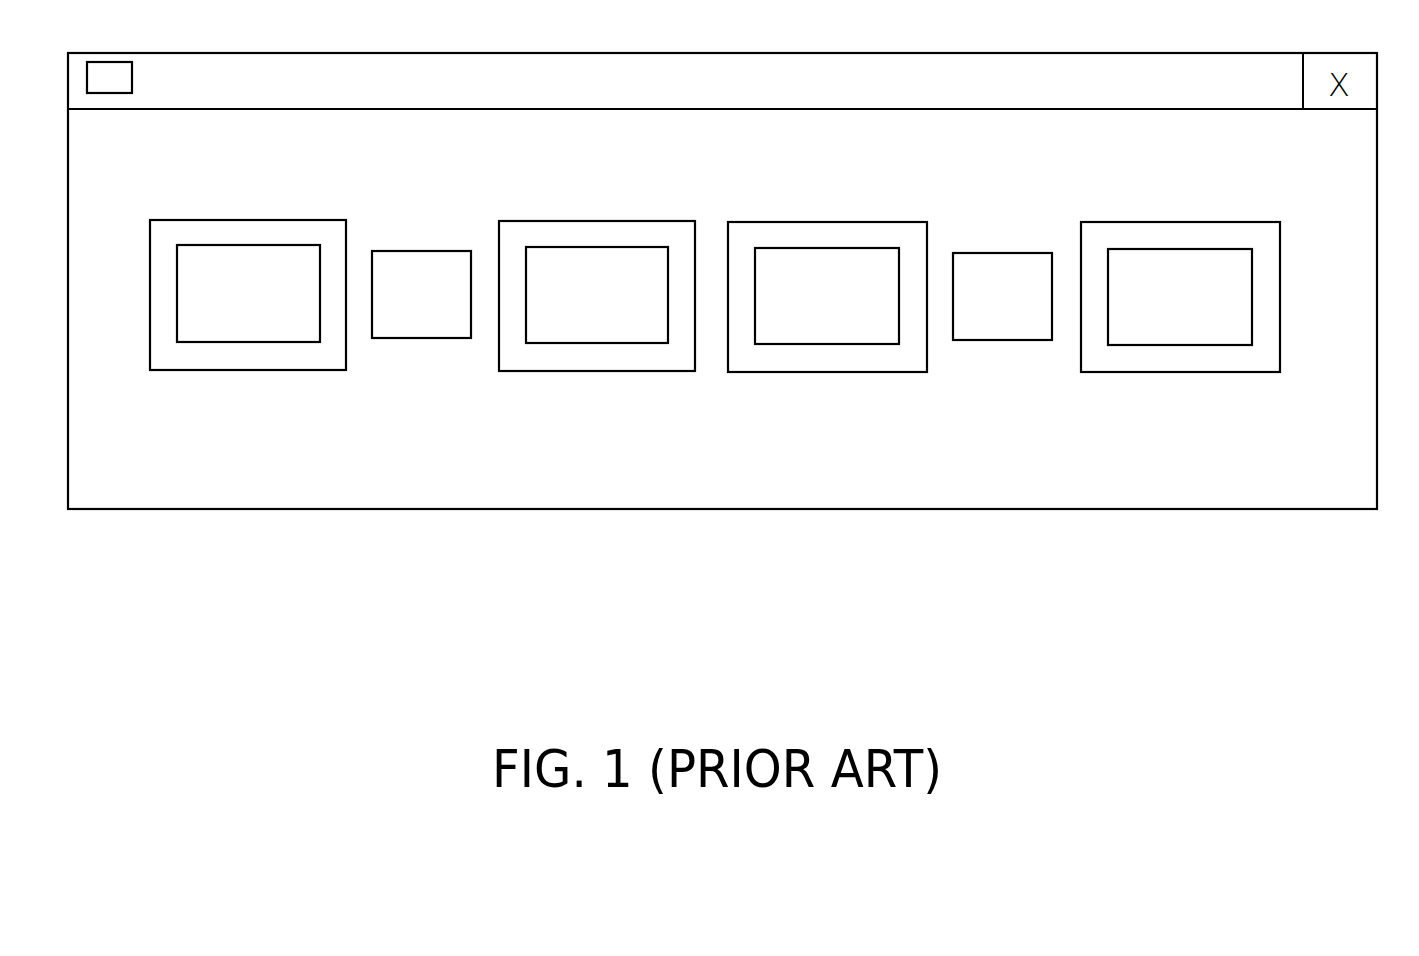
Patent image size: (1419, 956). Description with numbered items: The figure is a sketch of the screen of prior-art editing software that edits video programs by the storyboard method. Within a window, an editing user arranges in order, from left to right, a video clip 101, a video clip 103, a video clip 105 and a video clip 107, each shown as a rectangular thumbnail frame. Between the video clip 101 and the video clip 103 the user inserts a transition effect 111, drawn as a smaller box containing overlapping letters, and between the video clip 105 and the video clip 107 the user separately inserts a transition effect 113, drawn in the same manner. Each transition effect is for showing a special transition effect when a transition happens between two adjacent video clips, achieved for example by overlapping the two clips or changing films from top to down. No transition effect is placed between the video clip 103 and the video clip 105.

The video clip 101 is at (283, 371).
The video clip 103 is at (630, 372).
The video clip 105 is at (857, 373).
The video clip 107 is at (1213, 373).
The transition effect 111 is at (417, 339).
The transition effect 113 is at (1000, 341).